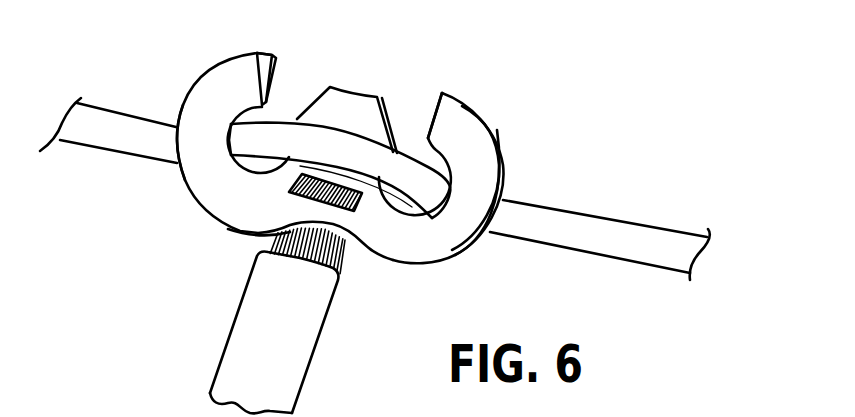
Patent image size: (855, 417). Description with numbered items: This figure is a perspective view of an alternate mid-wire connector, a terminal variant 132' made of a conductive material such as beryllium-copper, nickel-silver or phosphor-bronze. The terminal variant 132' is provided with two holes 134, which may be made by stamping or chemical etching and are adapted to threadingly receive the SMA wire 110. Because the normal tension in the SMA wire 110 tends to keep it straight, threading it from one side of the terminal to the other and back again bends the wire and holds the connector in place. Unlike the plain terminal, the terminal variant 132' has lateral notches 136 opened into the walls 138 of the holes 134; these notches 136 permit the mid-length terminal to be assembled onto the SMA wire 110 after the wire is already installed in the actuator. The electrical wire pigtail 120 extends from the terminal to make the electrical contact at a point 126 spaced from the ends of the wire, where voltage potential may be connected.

The SMA wire 110 is at (604, 220).
The electrical wire pigtail 120 is at (274, 266).
The point 126 is at (327, 130).
The terminal variant 132' is at (365, 147).
The holes 134 is at (224, 163).
The lateral notches 136 is at (274, 87).
The walls 138 is at (218, 90).